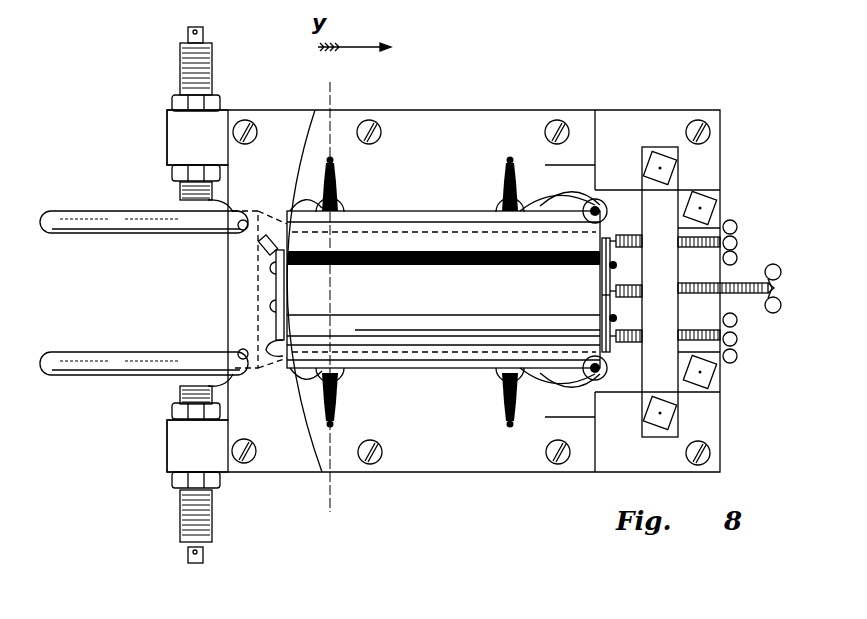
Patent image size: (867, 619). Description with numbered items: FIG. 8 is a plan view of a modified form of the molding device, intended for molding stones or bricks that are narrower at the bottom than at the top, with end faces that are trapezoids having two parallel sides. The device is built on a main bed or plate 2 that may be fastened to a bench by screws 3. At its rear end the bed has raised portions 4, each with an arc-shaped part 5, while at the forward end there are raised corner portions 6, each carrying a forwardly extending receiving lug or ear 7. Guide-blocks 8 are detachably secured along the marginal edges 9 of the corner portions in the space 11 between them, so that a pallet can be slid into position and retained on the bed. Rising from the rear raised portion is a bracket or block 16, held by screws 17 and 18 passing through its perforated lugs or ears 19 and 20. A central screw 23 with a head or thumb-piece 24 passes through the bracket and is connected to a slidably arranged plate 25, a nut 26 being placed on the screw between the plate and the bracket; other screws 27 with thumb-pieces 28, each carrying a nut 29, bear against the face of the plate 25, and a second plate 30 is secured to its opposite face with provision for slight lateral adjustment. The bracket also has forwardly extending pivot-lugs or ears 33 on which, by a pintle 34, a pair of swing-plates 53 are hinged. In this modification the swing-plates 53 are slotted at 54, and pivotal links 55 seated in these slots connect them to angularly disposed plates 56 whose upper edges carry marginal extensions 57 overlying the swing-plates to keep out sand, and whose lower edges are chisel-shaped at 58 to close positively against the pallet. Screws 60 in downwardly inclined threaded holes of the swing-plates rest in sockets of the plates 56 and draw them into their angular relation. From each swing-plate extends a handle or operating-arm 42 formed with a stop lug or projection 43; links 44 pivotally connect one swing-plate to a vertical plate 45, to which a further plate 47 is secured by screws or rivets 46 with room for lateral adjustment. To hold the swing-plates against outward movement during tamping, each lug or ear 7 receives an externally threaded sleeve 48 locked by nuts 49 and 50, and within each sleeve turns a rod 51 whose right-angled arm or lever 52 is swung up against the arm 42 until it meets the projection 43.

The main bed or plate 2 is at (503, 118).
The screws 3 is at (247, 122).
The raised portions 4 is at (617, 118).
The arc-shaped part 5 is at (566, 174).
The raised corner portions 6 is at (288, 120).
The receiving lug or ear 7 is at (167, 130).
The guide-blocks 8 is at (238, 237).
The marginal edges 9 is at (328, 299).
The space 11 is at (232, 279).
The bracket or block 16 is at (660, 292).
The screw 17 is at (650, 166).
The screw 18 is at (706, 210).
The perforated lug or ear 19 is at (666, 147).
The perforated lug or ear 20 is at (720, 196).
The central screw 23 is at (747, 283).
The head or thumb-piece 24 is at (748, 302).
The slidably-arranged plate 25 is at (604, 285).
The nut 26 is at (638, 288).
The screws 27 is at (699, 288).
The heads or thumb-pieces 28 is at (738, 228).
The nut 29 is at (636, 240).
The second plate 30 is at (602, 305).
The pivot-lugs or ears 33 is at (614, 292).
The pintle 34 is at (601, 204).
The handle or operating-arm 42 is at (88, 352).
The lug or projection 43 is at (205, 215).
The links 44 is at (270, 254).
The vertical plate 45 is at (288, 274).
The screws or rivets 46 is at (274, 313).
The plate 47 is at (288, 299).
The sleeve 48 is at (180, 56).
The nut 49 is at (174, 103).
The nut 50 is at (173, 172).
The rod 51 is at (189, 32).
The right-angled arm or lever 52 is at (188, 203).
The swing-plates 53 is at (408, 214).
The slotted portions 54 is at (326, 211).
The pivotal links 55 is at (346, 211).
The angularly-disposed plates 56 is at (414, 347).
The marginal extensions 57 is at (437, 228).
The chisel-shaped lower marginal edge 58 is at (484, 322).
The screws 60 is at (342, 150).